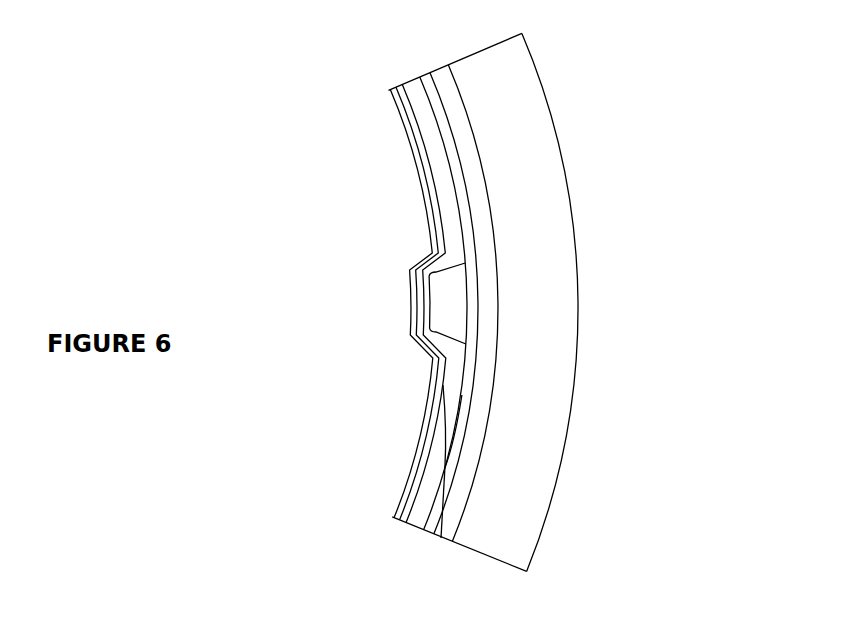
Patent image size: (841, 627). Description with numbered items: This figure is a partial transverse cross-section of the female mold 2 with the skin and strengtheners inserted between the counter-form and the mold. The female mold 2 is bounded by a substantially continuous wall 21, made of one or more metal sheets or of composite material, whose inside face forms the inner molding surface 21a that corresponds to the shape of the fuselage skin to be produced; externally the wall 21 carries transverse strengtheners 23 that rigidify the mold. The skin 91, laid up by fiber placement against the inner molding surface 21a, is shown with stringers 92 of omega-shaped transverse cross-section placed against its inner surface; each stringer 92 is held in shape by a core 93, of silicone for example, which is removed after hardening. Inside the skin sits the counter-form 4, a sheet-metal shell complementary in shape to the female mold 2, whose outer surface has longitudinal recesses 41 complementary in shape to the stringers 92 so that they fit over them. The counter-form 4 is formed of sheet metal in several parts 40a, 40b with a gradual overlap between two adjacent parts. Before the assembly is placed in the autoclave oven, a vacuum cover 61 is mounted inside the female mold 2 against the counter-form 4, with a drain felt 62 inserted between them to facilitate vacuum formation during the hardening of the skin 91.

The female mold 2 is at (575, 232).
The transverse strengtheners 23 is at (558, 331).
The continuous wall 21 is at (440, 70).
The inner molding surface 21a is at (448, 507).
The skin 91 is at (428, 79).
The stringers 92 is at (462, 231).
The core 93 is at (442, 296).
The counter-form 4 is at (440, 178).
The longitudinal recesses 41 is at (428, 315).
The vacuum cover 61 is at (410, 138).
The drain felt 62 is at (400, 83).
The counter-form part 40a is at (431, 482).
The counter-form part 40b is at (447, 395).